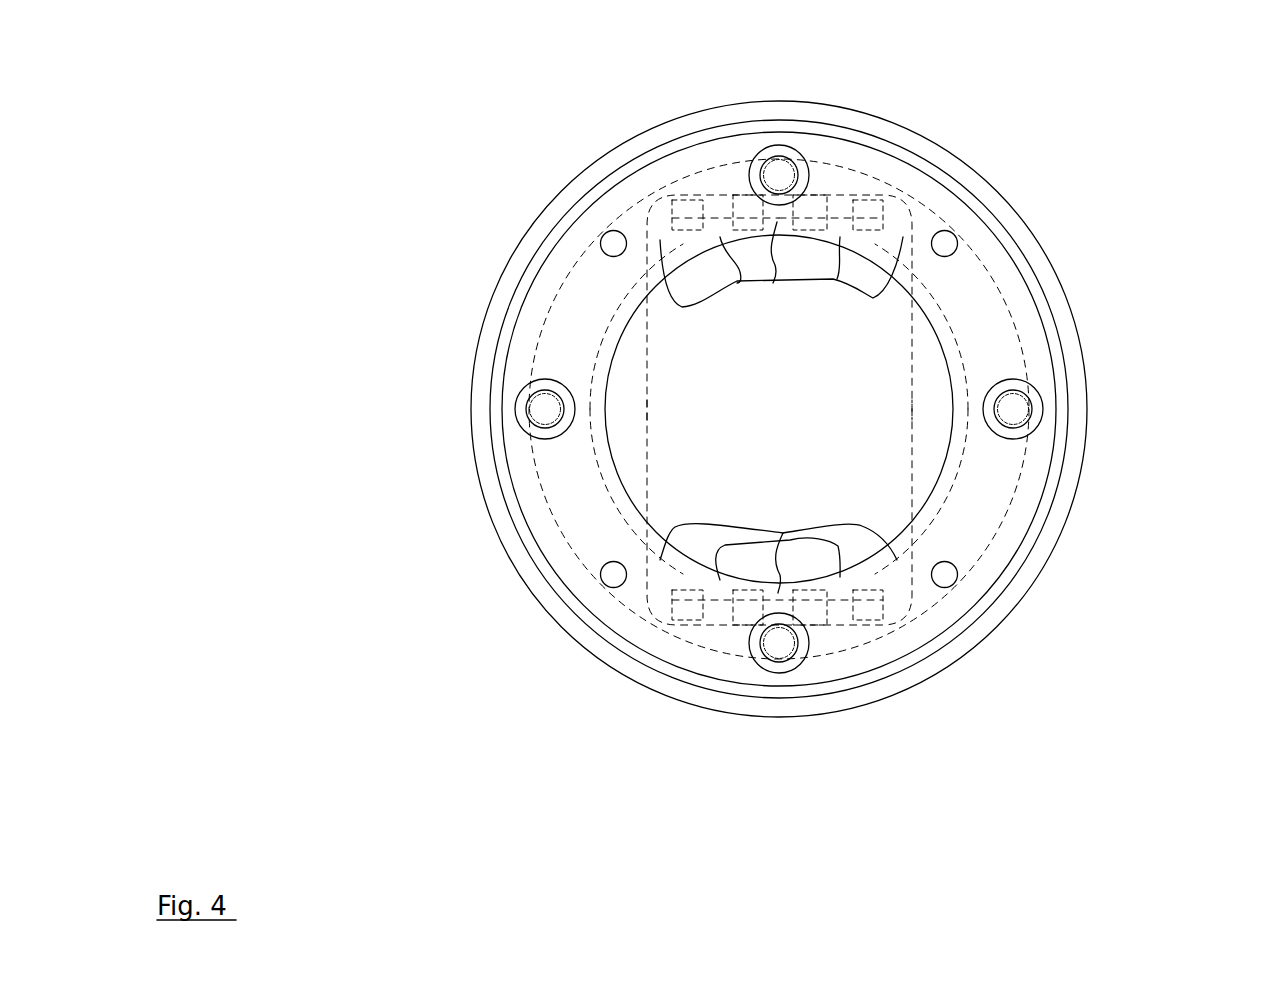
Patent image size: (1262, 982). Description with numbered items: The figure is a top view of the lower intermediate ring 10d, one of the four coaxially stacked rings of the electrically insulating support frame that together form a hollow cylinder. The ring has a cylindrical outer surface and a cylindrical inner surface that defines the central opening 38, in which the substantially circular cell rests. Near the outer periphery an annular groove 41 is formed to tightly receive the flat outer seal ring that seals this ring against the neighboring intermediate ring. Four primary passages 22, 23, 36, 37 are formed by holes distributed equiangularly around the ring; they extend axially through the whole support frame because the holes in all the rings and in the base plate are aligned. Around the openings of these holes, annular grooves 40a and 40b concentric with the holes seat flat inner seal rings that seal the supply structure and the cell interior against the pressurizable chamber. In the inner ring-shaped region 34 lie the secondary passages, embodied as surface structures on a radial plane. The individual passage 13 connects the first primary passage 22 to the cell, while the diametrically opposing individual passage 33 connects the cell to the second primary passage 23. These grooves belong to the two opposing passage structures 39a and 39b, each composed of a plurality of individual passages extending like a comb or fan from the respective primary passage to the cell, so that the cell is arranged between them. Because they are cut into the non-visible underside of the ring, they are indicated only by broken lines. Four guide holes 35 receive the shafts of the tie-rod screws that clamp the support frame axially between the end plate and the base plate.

The lower intermediate ring 10d is at (445, 183).
The individual passage 13 is at (781, 269).
The first primary passage 22 is at (777, 180).
The second primary passage 23 is at (778, 638).
The individual passage 33 is at (778, 548).
The inner ring-shaped region 34 is at (975, 502).
The guide holes 35 is at (615, 240).
The primary passage 36 is at (545, 409).
The primary passage 37 is at (1010, 407).
The opening 38 is at (875, 328).
The passage structure 39a is at (847, 160).
The passage structure 39b is at (876, 645).
The annular groove 40a is at (527, 380).
The annular groove 40b is at (1017, 345).
The annular groove 41 is at (498, 402).